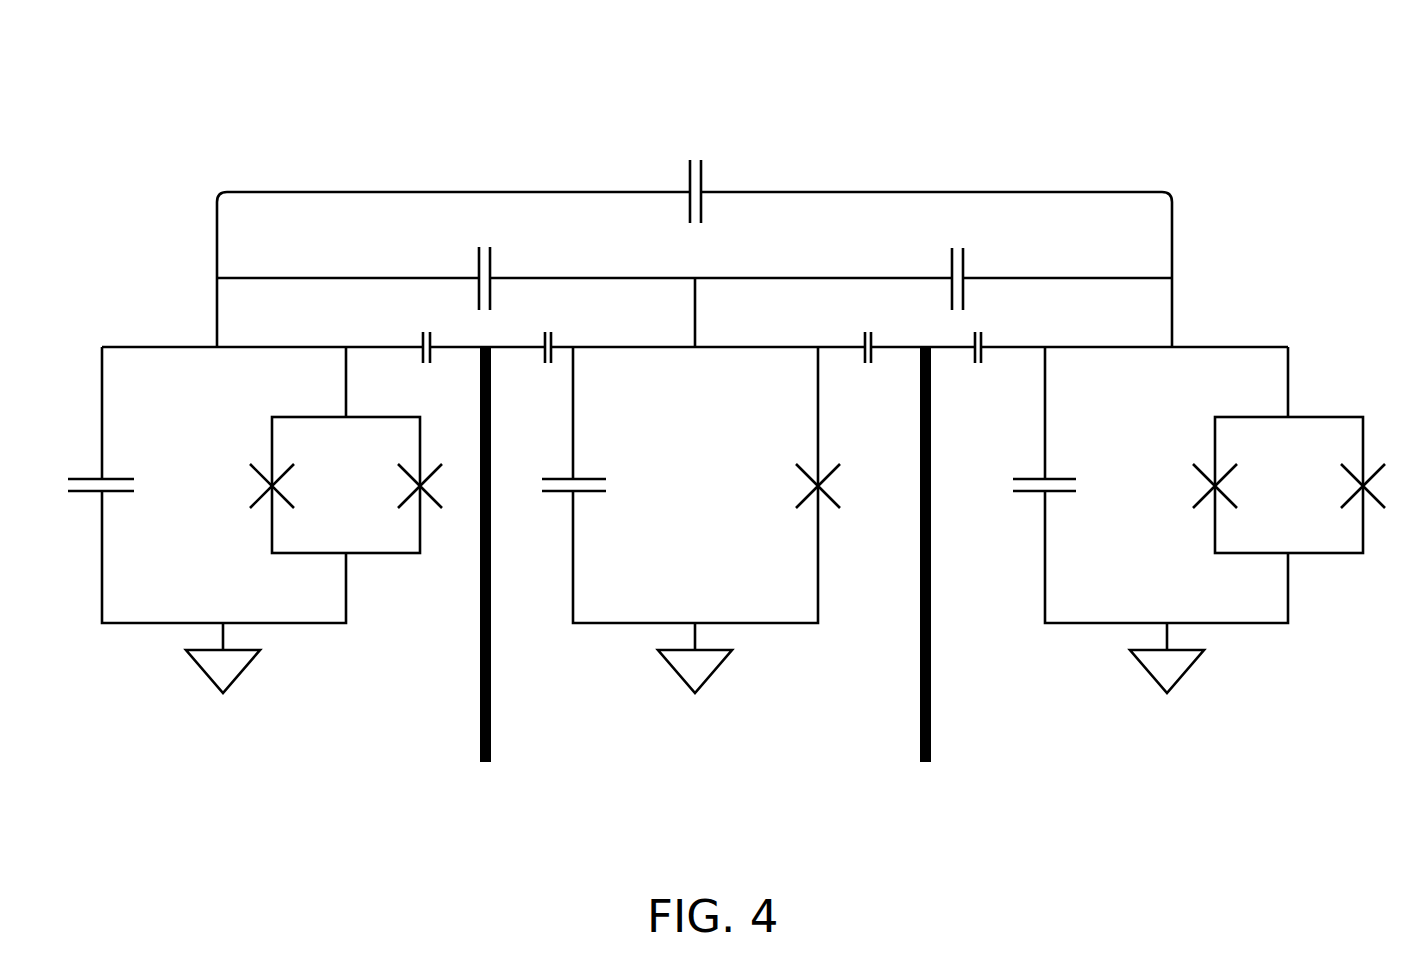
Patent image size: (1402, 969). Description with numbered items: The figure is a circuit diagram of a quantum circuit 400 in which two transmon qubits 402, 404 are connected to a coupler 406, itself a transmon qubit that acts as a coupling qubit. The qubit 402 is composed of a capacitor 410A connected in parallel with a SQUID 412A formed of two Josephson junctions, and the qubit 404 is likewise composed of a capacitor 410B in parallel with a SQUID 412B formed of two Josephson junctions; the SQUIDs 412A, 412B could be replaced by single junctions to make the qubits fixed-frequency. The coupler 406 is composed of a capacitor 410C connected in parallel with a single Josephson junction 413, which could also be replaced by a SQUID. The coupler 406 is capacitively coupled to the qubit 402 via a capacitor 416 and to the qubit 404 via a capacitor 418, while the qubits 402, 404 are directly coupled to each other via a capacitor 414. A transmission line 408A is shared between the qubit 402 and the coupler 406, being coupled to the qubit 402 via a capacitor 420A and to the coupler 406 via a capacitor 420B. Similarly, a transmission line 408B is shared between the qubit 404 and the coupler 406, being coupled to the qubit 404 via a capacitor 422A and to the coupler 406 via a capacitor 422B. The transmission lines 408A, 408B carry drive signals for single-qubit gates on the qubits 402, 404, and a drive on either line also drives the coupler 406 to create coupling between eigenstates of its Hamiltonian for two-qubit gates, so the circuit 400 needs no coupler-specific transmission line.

The circuit 400 is at (258, 108).
The qubit 402 is at (229, 528).
The qubit 404 is at (1199, 533).
The coupler 406 is at (723, 533).
The transmission line 408A is at (478, 713).
The transmission line 408B is at (933, 698).
The capacitor 410A is at (133, 479).
The capacitor 410B is at (1075, 479).
The capacitor 410C is at (605, 479).
The SQUID 412A is at (270, 530).
The SQUID 412B is at (1212, 530).
The Josephson junction 413 is at (803, 478).
The capacitor 414 is at (688, 185).
The capacitor 416 is at (478, 262).
The capacitor 418 is at (951, 262).
The capacitor 420A is at (421, 334).
The capacitor 420B is at (553, 333).
The capacitor 422A is at (983, 334).
The capacitor 422B is at (864, 334).